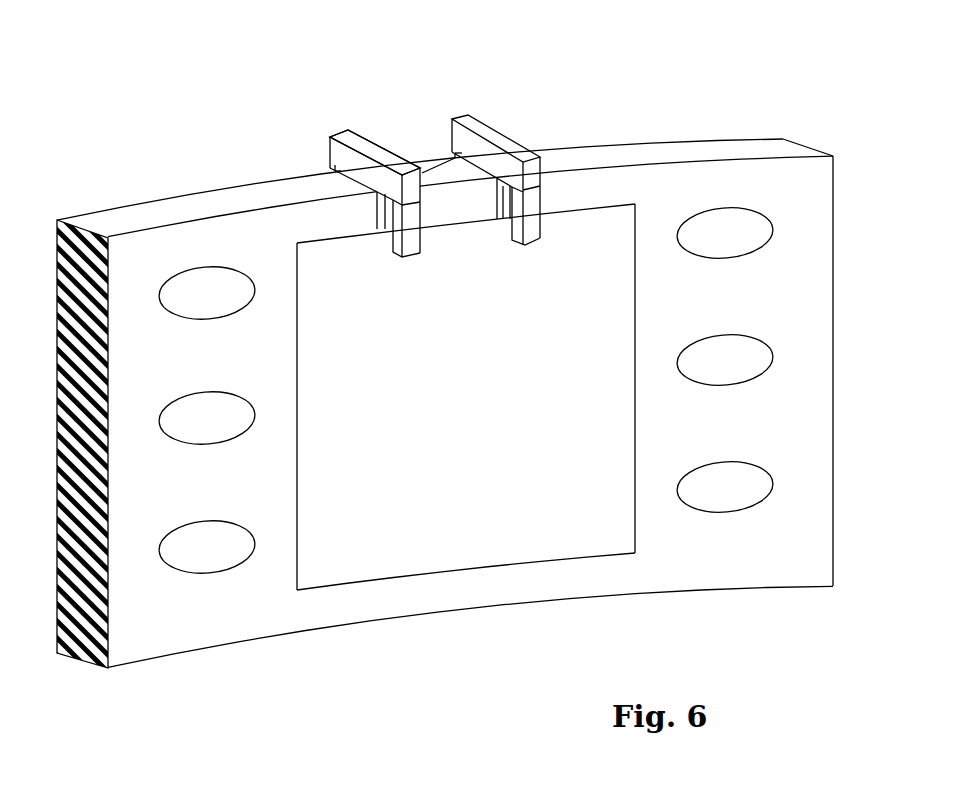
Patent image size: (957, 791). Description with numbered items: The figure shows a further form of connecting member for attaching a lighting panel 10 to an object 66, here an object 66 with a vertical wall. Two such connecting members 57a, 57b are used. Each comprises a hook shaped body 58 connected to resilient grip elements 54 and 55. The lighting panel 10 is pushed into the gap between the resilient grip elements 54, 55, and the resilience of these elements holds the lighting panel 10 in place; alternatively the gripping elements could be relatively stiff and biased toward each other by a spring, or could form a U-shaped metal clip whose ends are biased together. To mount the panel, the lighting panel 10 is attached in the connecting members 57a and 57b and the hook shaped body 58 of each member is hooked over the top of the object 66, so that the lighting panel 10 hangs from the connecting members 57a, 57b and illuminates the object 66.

The lighting panel 10 is at (478, 515).
The resilient grip element 54 is at (361, 203).
The resilient grip element 55 is at (385, 246).
The connecting member 57a is at (340, 132).
The connecting member 57b is at (516, 128).
The hook shaped body 58 is at (385, 135).
The object 66 is at (159, 633).